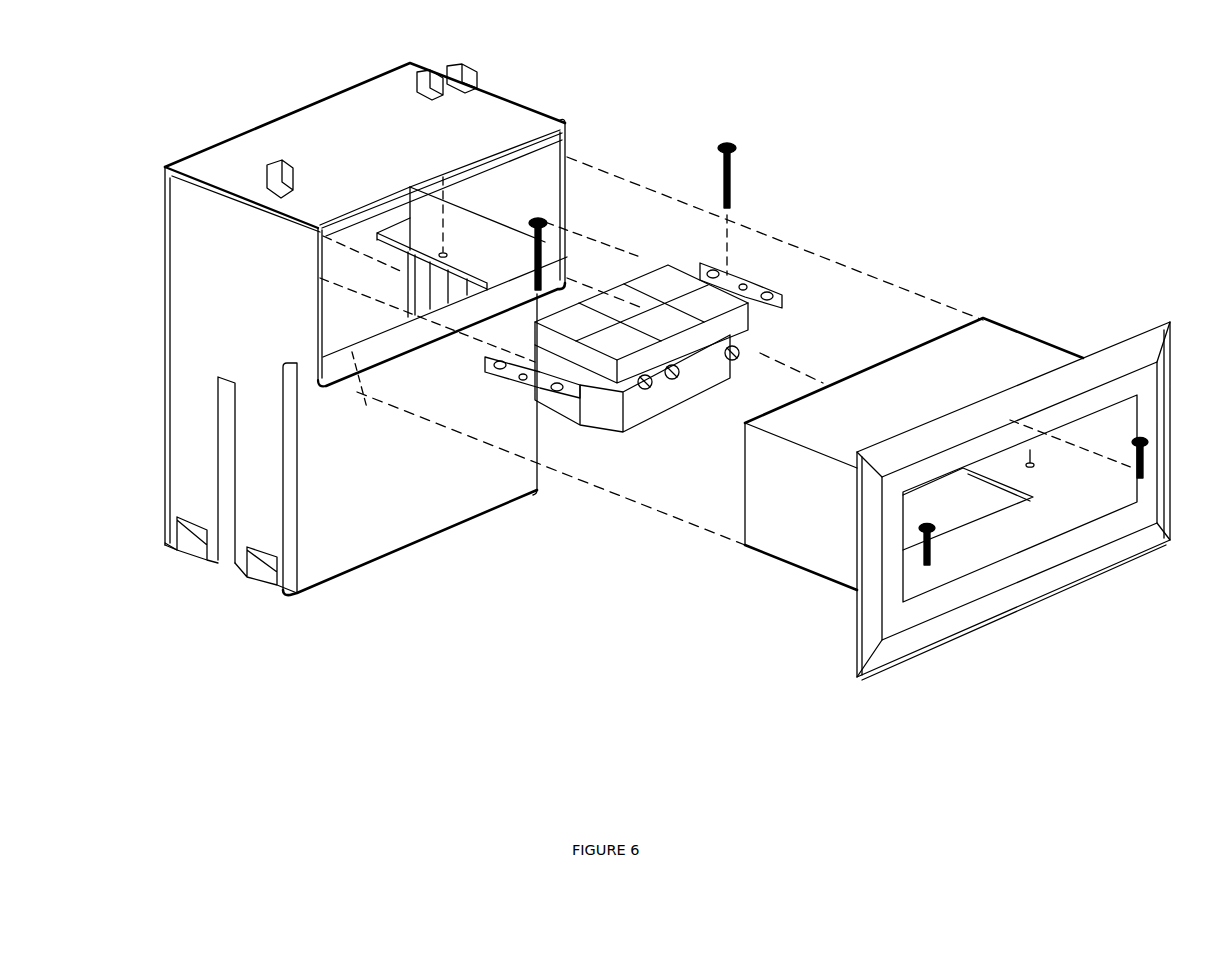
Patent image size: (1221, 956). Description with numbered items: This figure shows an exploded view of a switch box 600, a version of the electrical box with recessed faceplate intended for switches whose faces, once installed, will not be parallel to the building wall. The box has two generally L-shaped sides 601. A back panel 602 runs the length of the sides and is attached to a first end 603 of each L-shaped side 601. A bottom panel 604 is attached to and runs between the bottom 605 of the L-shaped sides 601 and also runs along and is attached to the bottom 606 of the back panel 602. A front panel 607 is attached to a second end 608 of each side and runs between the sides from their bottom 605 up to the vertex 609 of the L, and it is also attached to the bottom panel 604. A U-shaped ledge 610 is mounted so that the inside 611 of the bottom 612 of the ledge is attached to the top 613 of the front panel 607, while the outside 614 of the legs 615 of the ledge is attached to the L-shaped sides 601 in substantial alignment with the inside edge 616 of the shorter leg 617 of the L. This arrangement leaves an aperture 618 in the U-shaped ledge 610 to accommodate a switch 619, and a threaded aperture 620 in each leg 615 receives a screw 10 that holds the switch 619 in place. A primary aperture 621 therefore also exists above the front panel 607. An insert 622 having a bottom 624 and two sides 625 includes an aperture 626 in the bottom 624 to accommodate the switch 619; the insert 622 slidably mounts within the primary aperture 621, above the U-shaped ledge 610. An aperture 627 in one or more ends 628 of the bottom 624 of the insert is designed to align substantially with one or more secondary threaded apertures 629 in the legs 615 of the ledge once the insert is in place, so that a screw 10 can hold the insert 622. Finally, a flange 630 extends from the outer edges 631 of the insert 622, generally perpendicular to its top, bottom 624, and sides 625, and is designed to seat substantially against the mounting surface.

The screw 10 is at (733, 178).
The switch box 600 is at (477, 548).
The L-shaped side 601 is at (180, 247).
The back panel 602 is at (230, 137).
The first end 603 is at (163, 320).
The bottom panel 604 is at (320, 587).
The bottom of the L-shaped sides 605 is at (238, 565).
The bottom of the back panel 606 is at (173, 563).
The front panel 607 is at (367, 537).
The second end 608 is at (543, 483).
The vertex 609 is at (282, 367).
The U-shaped ledge 610 is at (382, 343).
The inside of the bottom of the U-shaped ledge 611 is at (427, 338).
The bottom of the U-shaped ledge 612 is at (417, 347).
The top of the front panel 613 is at (317, 386).
The outside of the legs 614 is at (468, 235).
The legs of the U-shaped ledge 615 is at (325, 345).
The inside edge 616 is at (577, 258).
The shorter leg of the L 617 is at (293, 318).
The aperture 618 is at (375, 238).
The switch 619 is at (605, 417).
The threaded aperture 620 is at (440, 254).
The primary aperture 621 is at (343, 237).
The insert 622 is at (755, 600).
The bottom of the insert 624 is at (980, 560).
The sides of the insert 625 is at (758, 480).
The aperture in the bottom of the insert 626 is at (987, 502).
The aperture in the end of the insert bottom 627 is at (985, 509).
The end of the bottom of the insert 628 is at (1037, 470).
The secondary threaded aperture 629 is at (455, 248).
The flange 630 is at (998, 408).
The outer edges of the insert 631 is at (935, 475).